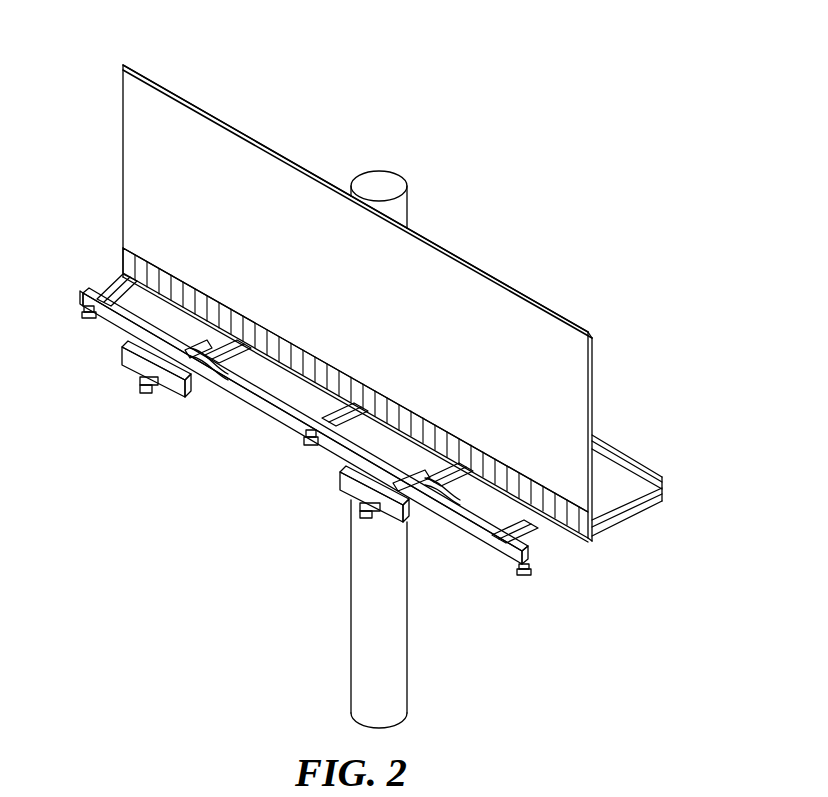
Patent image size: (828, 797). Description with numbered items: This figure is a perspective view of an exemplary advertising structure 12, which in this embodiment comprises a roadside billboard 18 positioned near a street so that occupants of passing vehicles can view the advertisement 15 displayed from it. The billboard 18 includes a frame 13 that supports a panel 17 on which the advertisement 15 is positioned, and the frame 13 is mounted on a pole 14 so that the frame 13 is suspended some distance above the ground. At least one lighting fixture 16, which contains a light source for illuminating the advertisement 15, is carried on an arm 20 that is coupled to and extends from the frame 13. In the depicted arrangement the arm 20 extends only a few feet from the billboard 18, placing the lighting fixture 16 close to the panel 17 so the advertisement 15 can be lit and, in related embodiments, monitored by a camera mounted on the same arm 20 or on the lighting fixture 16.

The advertising structure 12 is at (540, 217).
The frame 13 is at (297, 412).
The pole 14 is at (352, 562).
The advertisement 15 is at (142, 208).
The lighting fixture 16 is at (134, 368).
The panel 17 is at (593, 409).
The roadside billboard 18 is at (178, 116).
The arm 20 is at (222, 373).